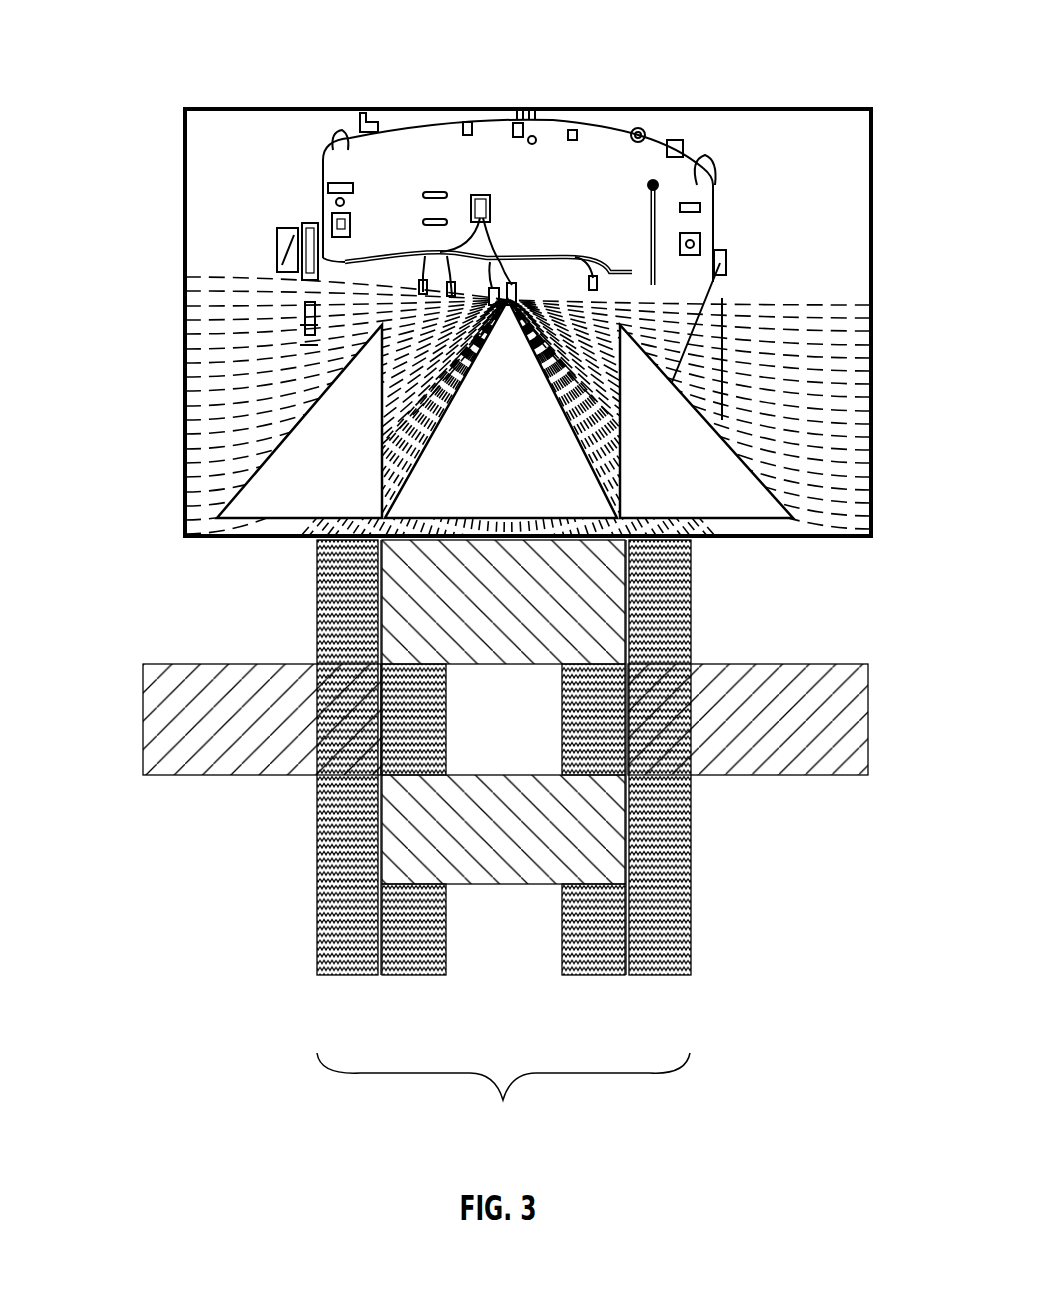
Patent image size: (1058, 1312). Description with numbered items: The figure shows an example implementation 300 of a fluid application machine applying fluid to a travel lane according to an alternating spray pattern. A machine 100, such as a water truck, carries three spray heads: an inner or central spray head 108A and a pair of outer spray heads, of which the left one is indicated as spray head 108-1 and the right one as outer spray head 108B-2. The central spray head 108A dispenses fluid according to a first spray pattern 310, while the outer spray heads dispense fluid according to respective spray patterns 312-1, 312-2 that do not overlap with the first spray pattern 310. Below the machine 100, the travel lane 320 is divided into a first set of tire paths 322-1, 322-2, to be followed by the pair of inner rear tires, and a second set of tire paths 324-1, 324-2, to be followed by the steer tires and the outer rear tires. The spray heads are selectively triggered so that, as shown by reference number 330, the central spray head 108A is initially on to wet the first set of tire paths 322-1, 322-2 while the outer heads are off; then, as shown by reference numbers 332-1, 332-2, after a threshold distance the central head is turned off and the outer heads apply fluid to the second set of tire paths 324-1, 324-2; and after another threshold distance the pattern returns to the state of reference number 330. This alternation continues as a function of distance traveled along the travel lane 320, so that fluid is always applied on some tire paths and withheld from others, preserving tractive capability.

The example implementation 300 is at (130, 36).
The machine 100 is at (318, 195).
The first camera 108-1 is at (382, 325).
The inner or central spray head 108A is at (508, 295).
The outer spray head 108B-2 is at (620, 325).
The spray pattern 312-1 is at (310, 430).
The spray pattern 312-2 is at (693, 427).
The first spray pattern 310 is at (548, 487).
The travel lane 320 is at (503, 1100).
The tire path 322-1 is at (417, 977).
The tire path 322-2 is at (597, 977).
The tire path 324-1 is at (317, 922).
The tire path 324-2 is at (692, 930).
The central spray on state 330 is at (397, 578).
The outer spray on state 332-1 is at (168, 664).
The outer spray on state 332-2 is at (840, 664).